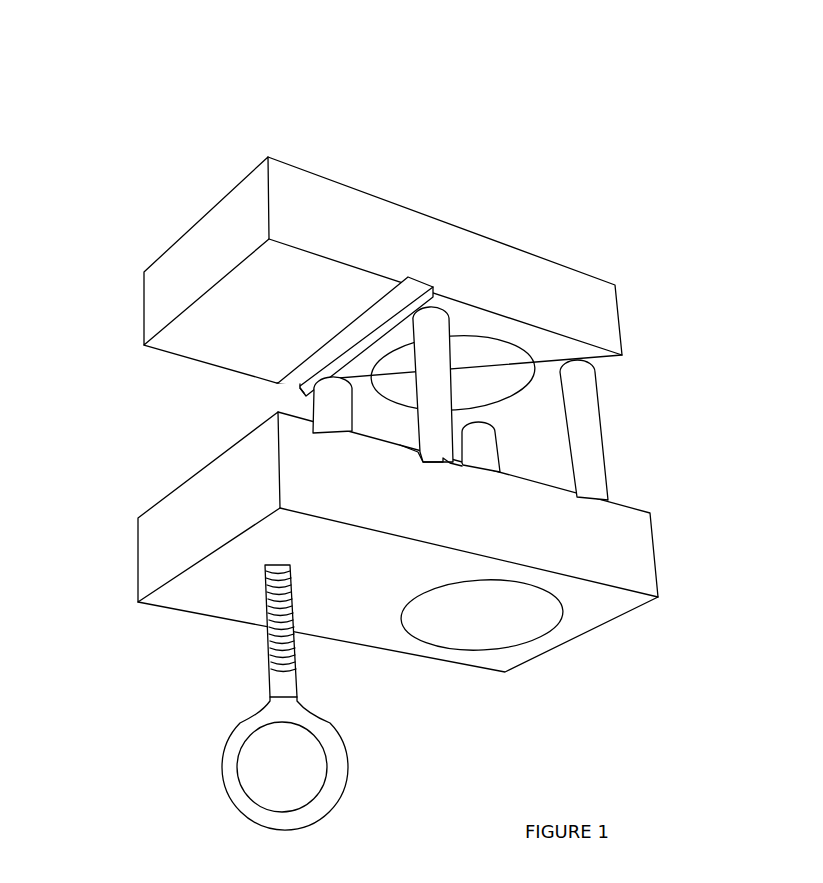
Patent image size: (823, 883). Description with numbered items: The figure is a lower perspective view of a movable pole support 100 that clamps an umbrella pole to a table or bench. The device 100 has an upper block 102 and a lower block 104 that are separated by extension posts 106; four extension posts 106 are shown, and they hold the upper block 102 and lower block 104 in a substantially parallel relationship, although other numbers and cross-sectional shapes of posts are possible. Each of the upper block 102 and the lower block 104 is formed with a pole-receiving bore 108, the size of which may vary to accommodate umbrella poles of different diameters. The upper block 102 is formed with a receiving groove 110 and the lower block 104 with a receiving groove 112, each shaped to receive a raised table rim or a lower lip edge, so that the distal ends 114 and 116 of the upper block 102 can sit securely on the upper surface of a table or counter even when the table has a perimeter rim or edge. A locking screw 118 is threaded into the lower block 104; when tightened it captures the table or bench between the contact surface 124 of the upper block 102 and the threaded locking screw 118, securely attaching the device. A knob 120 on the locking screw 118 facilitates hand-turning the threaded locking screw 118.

The movable pole support 100 is at (177, 99).
The upper block 102 is at (607, 310).
The lower block 104 is at (627, 553).
The extension posts 106 is at (593, 427).
The pole-receiving bore 108 is at (492, 350).
The receiving groove 110 is at (418, 280).
The receiving groove 112 is at (430, 464).
The distal end 114 is at (160, 293).
The distal end 116 is at (150, 555).
The locking screw 118 is at (267, 658).
The knob 120 is at (350, 768).
The contact surface 124 is at (183, 348).